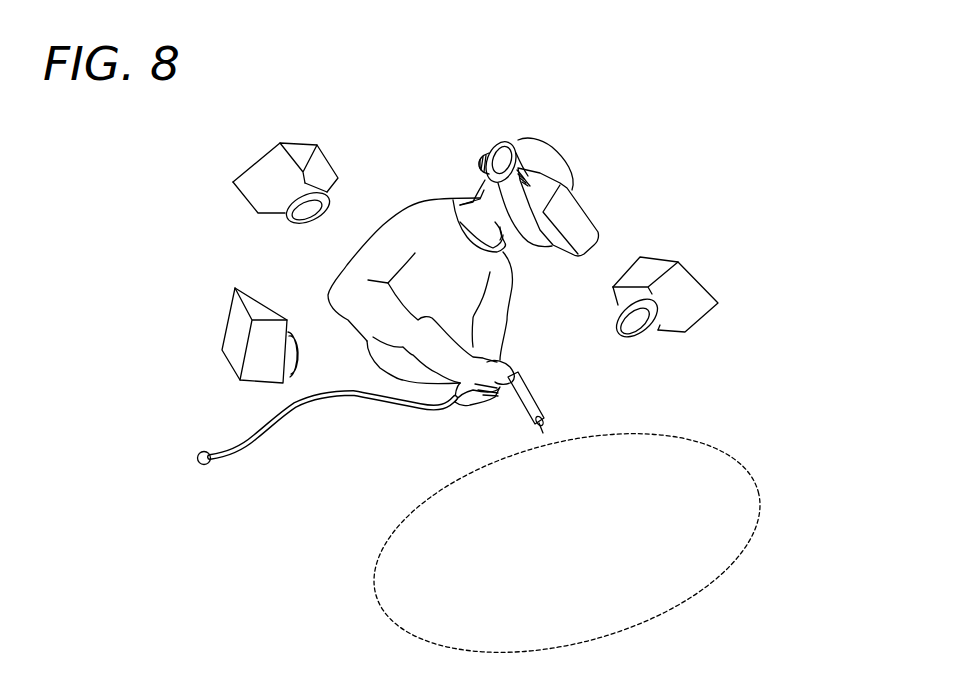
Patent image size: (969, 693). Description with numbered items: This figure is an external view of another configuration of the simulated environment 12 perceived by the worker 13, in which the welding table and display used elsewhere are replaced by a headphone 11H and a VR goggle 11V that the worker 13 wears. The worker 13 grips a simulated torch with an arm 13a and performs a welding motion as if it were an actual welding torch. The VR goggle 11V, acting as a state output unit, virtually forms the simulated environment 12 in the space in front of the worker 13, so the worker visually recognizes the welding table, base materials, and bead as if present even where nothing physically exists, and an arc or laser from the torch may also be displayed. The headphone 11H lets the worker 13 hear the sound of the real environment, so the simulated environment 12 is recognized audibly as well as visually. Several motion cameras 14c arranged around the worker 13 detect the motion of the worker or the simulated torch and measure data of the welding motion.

The worker 13 is at (596, 158).
The arm of the worker 13a is at (440, 350).
The headphone 11H is at (503, 157).
The VR goggle 11V is at (575, 220).
The motion camera 14c is at (265, 178).
The simulated environment 12 is at (720, 447).